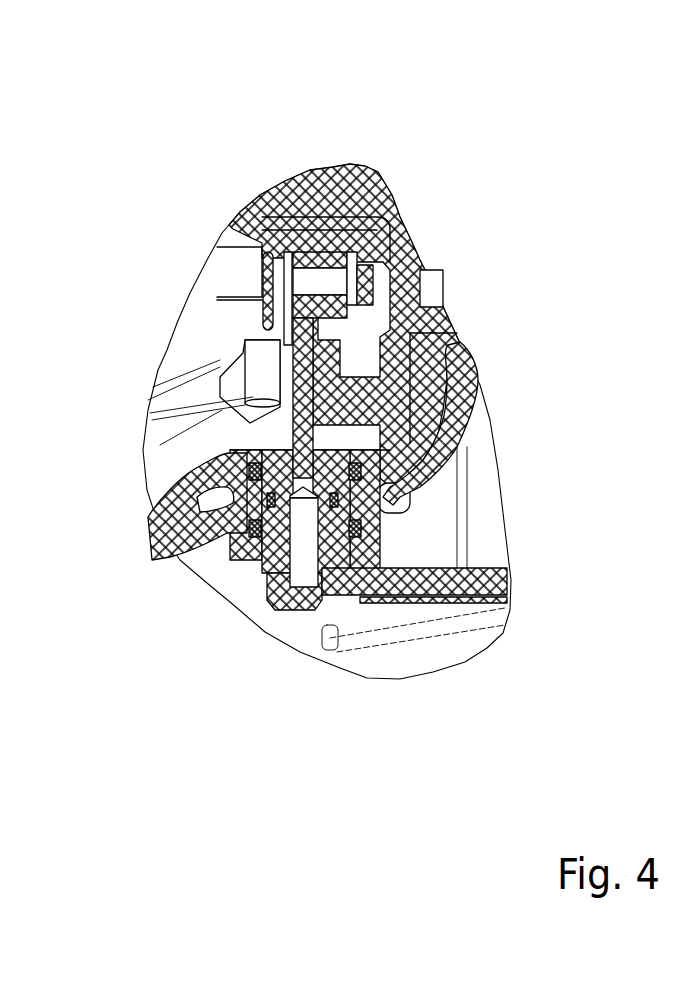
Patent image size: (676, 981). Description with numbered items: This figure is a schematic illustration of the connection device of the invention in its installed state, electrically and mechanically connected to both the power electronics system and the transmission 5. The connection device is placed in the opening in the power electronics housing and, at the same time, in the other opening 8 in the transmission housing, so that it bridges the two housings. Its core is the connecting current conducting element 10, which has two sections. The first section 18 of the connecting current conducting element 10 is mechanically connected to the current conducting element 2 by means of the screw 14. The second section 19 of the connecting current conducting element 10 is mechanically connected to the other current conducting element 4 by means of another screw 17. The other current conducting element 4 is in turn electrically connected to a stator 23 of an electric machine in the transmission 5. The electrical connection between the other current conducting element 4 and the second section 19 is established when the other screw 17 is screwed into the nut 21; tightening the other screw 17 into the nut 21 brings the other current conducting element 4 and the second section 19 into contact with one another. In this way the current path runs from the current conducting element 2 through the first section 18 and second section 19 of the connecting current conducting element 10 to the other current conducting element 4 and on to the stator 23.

The current conducting element 2 is at (458, 603).
The other current conducting element 4 is at (257, 350).
The transmission 5 is at (422, 160).
The other opening 8 is at (207, 598).
The connecting current conducting element 10 is at (266, 438).
The screw 14 is at (302, 612).
The other screw 17 is at (402, 268).
The first section 18 is at (383, 604).
The second section 19 is at (278, 441).
The nut 21 is at (342, 228).
The stator 23 is at (218, 273).